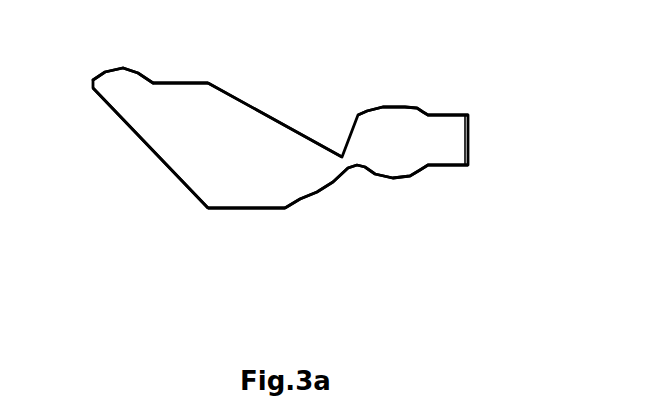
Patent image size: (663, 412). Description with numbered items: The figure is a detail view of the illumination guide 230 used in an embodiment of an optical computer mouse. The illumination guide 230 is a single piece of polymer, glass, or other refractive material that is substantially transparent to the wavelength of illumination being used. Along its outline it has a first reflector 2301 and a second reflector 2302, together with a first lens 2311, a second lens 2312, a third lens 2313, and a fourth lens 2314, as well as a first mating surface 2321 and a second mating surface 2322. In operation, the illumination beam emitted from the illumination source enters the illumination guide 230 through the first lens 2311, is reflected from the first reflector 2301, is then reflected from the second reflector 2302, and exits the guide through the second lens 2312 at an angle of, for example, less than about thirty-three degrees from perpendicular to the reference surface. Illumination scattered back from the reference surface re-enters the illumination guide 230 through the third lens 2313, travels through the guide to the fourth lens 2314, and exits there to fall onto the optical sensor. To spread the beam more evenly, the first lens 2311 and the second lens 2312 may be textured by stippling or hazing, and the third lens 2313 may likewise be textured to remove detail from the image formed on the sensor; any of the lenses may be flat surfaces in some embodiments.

The illumination guide 230 is at (280, 138).
The first reflector 2301 is at (142, 163).
The second reflector 2302 is at (278, 112).
The first lens 2311 is at (142, 58).
The second lens 2312 is at (335, 195).
The third lens 2313 is at (397, 190).
The fourth lens 2314 is at (408, 95).
The first mating surface 2321 is at (176, 74).
The second mating surface 2322 is at (247, 218).